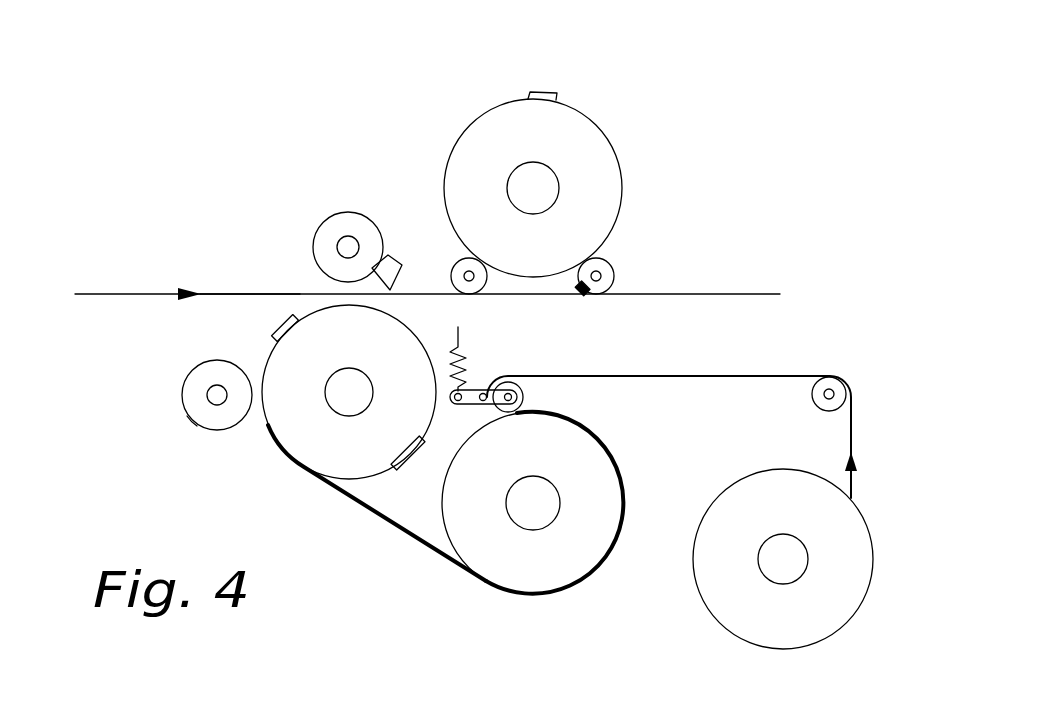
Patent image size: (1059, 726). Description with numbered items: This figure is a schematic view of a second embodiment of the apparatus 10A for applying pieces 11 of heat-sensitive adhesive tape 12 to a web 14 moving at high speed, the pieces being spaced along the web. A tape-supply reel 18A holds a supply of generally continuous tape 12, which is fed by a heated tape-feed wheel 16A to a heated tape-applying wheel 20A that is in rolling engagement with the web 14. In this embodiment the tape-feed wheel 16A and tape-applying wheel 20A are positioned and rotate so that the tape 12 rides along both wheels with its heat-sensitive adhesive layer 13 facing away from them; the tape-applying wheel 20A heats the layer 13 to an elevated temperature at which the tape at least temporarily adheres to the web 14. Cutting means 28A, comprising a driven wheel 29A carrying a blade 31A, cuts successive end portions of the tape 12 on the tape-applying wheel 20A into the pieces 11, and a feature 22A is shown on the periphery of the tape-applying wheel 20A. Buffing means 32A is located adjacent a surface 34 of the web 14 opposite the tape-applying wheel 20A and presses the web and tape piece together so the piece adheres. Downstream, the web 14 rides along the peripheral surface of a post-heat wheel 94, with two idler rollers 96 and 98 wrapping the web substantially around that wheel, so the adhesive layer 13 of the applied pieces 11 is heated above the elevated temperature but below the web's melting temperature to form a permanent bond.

The apparatus 10A is at (231, 149).
The pieces of tape 11 is at (548, 93).
The heat-sensitive adhesive tape 12 is at (385, 529).
The heat-sensitive adhesive layer 13 is at (441, 559).
The web 14 is at (131, 291).
The tape-feed wheel 16A is at (558, 553).
The tape-supply reel 18A is at (763, 609).
The tape-applying wheel 20A is at (265, 434).
The label on drum 22A is at (371, 479).
The cutting means 28A is at (181, 386).
The wheel 29A is at (183, 403).
The blade 31A is at (198, 426).
The buffing means 32A is at (351, 211).
The surface of the web 34 is at (241, 293).
The post-heat wheel 94 is at (622, 183).
The idler roller 96 is at (456, 262).
The idler roller 98 is at (617, 263).